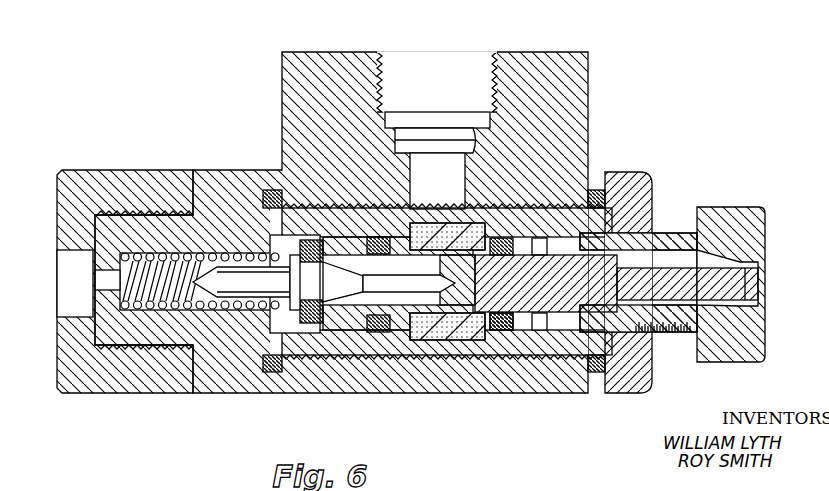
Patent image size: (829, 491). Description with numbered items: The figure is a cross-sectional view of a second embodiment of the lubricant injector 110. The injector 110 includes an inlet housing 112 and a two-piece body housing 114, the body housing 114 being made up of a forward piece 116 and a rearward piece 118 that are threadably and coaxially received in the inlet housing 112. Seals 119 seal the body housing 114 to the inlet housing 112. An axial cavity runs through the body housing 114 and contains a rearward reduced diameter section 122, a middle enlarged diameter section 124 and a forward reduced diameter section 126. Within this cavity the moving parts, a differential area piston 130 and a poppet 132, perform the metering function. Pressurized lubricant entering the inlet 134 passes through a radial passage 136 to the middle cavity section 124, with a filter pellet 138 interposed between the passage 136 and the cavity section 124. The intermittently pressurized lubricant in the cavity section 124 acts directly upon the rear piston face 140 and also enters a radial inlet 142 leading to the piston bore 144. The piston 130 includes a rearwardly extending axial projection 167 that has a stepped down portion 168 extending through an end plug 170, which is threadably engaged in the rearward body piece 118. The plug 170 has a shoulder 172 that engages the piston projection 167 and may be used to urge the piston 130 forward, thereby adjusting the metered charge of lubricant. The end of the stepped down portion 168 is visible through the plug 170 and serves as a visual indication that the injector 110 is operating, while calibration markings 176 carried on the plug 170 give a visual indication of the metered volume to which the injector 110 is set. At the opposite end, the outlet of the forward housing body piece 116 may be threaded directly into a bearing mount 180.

The injector 110 is at (437, 235).
The inlet housing 112 is at (371, 219).
The two-piece body housing 114 is at (656, 170).
The forward piece 116 is at (228, 186).
The rearward piece 118 is at (643, 196).
The seals 119 is at (269, 394).
The rearward reduced diameter section 122 is at (502, 325).
The middle enlarged diameter section 124 is at (352, 236).
The forward reduced diameter section 126 is at (230, 253).
The differential area piston 130 is at (342, 334).
The poppet 132 is at (210, 281).
The inlet 134 is at (437, 82).
The radial passage 136 is at (437, 181).
The filter pellet 138 is at (470, 212).
The rear piston face 140 is at (410, 218).
The radial inlet 142 is at (472, 300).
The piston bore 144 is at (472, 270).
The rearwardly extending axial projection 167 is at (616, 283).
The stepped down portion 168 is at (752, 284).
The end plug 170 is at (735, 218).
The shoulder 172 is at (300, 236).
The calibration markings 176 is at (671, 334).
The bearing mount 180 is at (131, 213).